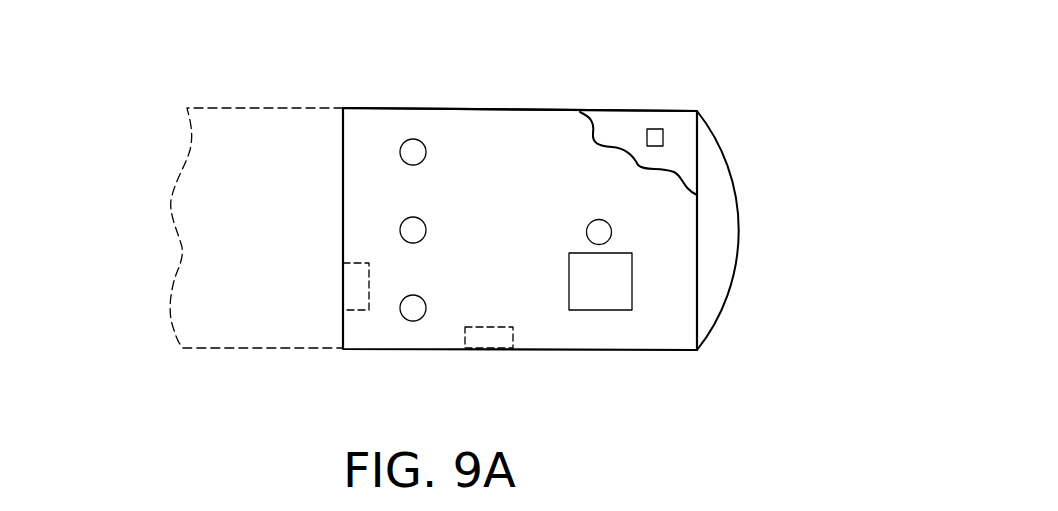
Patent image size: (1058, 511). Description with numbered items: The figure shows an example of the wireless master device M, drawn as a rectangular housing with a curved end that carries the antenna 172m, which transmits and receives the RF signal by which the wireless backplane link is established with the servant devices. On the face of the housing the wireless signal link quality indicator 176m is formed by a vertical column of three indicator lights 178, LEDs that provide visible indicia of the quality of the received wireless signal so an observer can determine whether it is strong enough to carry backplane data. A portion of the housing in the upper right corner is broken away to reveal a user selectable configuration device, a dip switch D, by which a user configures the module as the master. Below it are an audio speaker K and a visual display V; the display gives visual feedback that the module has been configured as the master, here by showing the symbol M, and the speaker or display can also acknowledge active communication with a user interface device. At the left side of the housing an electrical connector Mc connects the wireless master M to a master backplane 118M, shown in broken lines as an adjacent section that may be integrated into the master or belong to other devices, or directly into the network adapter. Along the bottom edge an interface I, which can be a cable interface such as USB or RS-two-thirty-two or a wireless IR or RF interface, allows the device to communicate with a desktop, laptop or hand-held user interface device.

The master backplane 118M is at (235, 185).
The wireless signal link quality indicator 176m is at (427, 128).
The indicator lights 178 is at (413, 152).
The dip switch D is at (653, 129).
The antenna 172m is at (735, 172).
The audio speaker K is at (597, 228).
The wireless master device M is at (645, 362).
The visual display V is at (618, 300).
The electrical connector Mc is at (350, 292).
The interface I is at (487, 336).